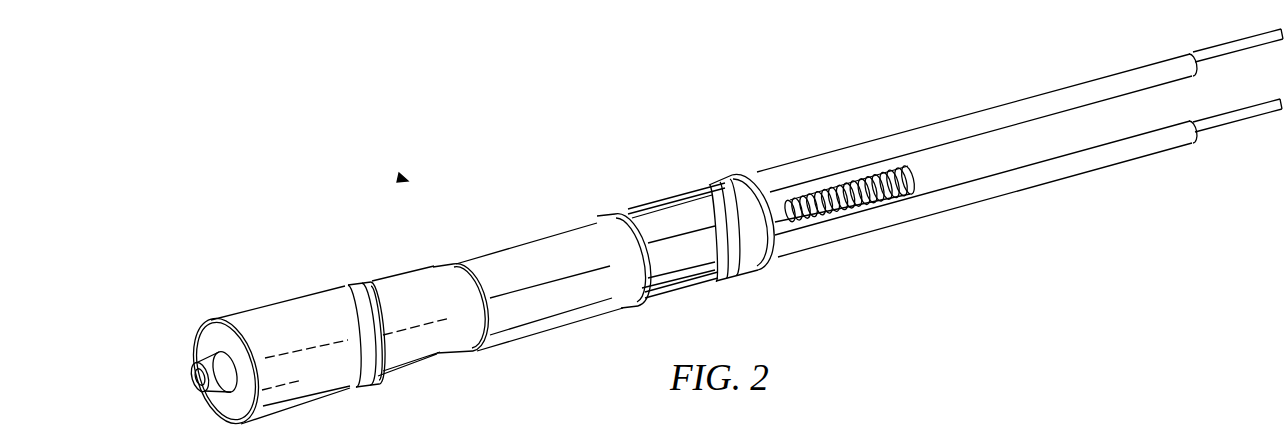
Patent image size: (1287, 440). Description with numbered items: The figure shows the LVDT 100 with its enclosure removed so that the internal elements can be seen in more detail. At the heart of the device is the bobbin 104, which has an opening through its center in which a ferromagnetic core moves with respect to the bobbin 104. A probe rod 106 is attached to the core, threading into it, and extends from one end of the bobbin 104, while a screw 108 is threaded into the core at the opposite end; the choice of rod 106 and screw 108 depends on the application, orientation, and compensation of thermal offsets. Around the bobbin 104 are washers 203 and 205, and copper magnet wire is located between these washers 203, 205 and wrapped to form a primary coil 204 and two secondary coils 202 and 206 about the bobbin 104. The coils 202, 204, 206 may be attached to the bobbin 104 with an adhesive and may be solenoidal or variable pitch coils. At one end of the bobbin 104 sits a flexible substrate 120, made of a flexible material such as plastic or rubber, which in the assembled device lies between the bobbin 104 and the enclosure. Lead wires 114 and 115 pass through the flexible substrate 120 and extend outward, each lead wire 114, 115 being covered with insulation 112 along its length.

The LVDT 100 is at (400, 177).
The bobbin 104 is at (277, 312).
The probe rod 106 is at (858, 216).
The screw 108 is at (207, 392).
The insulation 112 is at (957, 122).
The lead wire 114 is at (667, 193).
The lead wire 115 is at (676, 292).
The flexible substrate 120 is at (739, 188).
The secondary coil 202 is at (416, 283).
The washer 203 is at (480, 352).
The primary coil 204 is at (544, 247).
The washer 205 is at (634, 306).
The secondary coil 206 is at (650, 220).